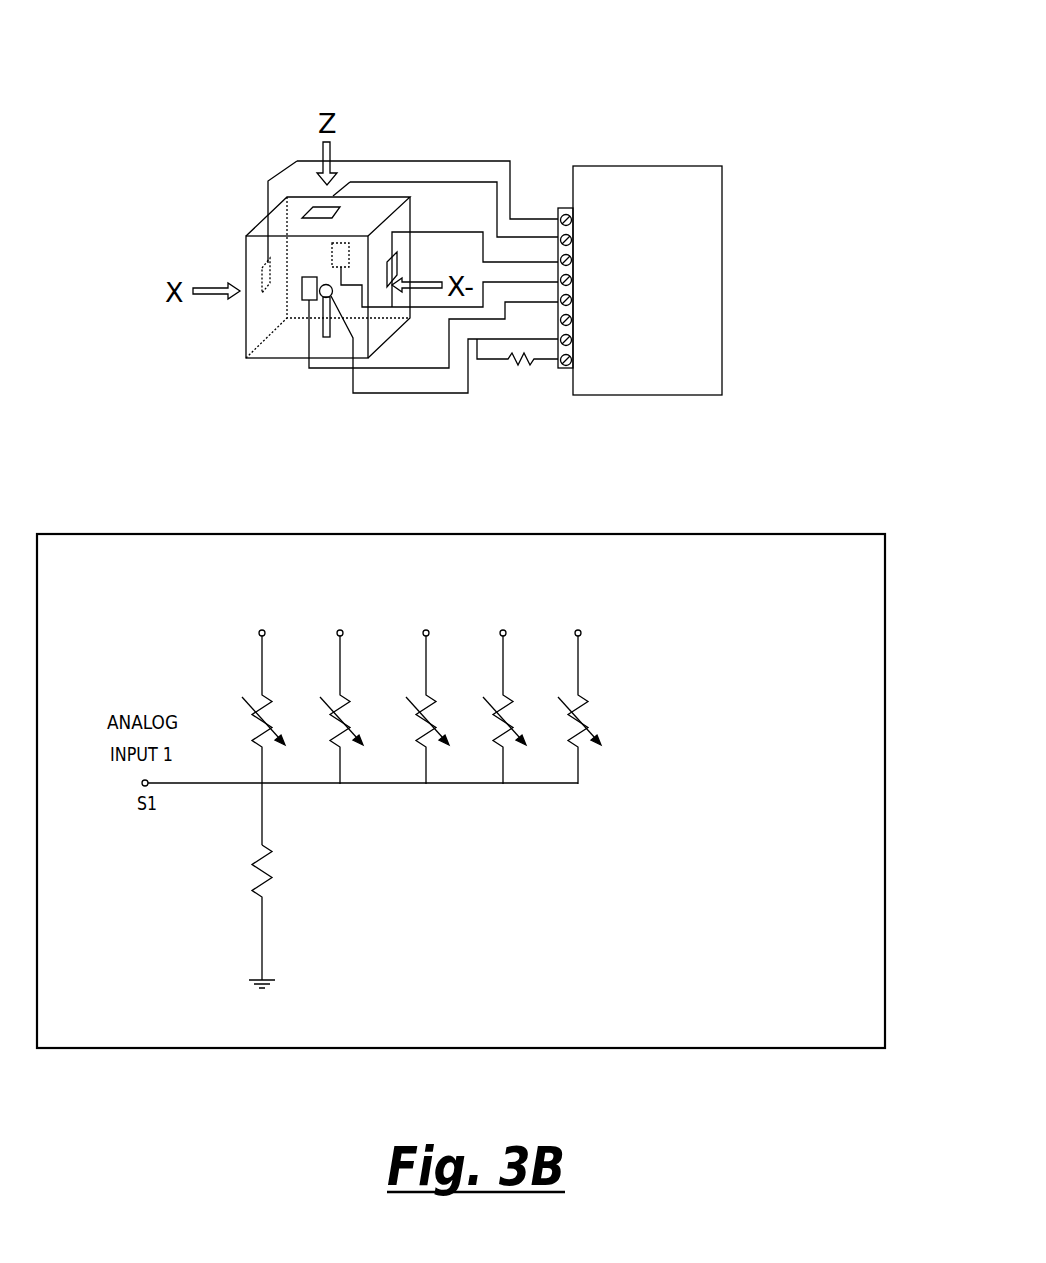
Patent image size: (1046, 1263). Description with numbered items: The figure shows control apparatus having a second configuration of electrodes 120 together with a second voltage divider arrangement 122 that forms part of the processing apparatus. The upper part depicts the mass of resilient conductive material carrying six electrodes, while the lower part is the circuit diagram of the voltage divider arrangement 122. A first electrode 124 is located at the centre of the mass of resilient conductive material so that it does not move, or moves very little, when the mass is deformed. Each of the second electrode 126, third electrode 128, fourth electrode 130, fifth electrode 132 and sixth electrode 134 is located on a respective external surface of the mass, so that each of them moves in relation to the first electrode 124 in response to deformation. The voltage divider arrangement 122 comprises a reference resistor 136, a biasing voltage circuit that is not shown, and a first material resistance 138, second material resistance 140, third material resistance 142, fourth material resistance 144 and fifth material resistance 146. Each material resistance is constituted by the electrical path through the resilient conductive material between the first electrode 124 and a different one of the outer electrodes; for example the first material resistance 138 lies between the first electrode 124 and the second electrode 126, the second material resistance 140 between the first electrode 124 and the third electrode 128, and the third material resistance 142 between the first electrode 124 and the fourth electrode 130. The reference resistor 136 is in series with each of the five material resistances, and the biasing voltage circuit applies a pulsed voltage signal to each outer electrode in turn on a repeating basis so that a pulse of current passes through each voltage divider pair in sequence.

The second configuration of electrodes 120 is at (677, 128).
The voltage divider arrangement 122 is at (695, 248).
The first electrode 124 is at (322, 296).
The second electrode 126 is at (313, 214).
The third electrode 128 is at (265, 272).
The fourth electrode 130 is at (345, 250).
The fifth electrode 132 is at (393, 270).
The sixth electrode 134 is at (303, 290).
The reference resistor 136 is at (260, 888).
The first material resistance 138 is at (258, 718).
The second material resistance 140 is at (334, 730).
The third material resistance 142 is at (420, 730).
The fourth material resistance 144 is at (497, 730).
The fifth material resistance 146 is at (572, 730).